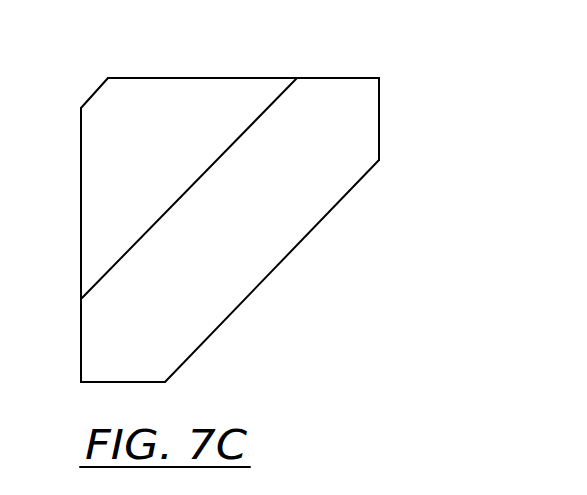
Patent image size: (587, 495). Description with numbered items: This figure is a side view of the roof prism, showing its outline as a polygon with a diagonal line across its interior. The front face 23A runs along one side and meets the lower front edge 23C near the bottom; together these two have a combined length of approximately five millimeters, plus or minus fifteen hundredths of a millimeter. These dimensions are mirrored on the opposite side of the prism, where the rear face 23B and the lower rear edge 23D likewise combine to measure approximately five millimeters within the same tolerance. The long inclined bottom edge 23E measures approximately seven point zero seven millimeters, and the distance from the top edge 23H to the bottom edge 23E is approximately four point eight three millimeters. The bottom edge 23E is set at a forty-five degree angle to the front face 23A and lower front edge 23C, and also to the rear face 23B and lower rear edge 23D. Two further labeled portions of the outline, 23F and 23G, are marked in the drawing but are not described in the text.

The front face 23A is at (80, 243).
The rear face 23B is at (235, 77).
The lower front edge 23C is at (82, 339).
The lower rear edge 23D is at (354, 76).
The bottom edge 23E is at (290, 254).
The bottom edge of plate segment 23F is at (135, 383).
The right side edge of plate segment 23G is at (380, 118).
The top edge 23H is at (92, 98).